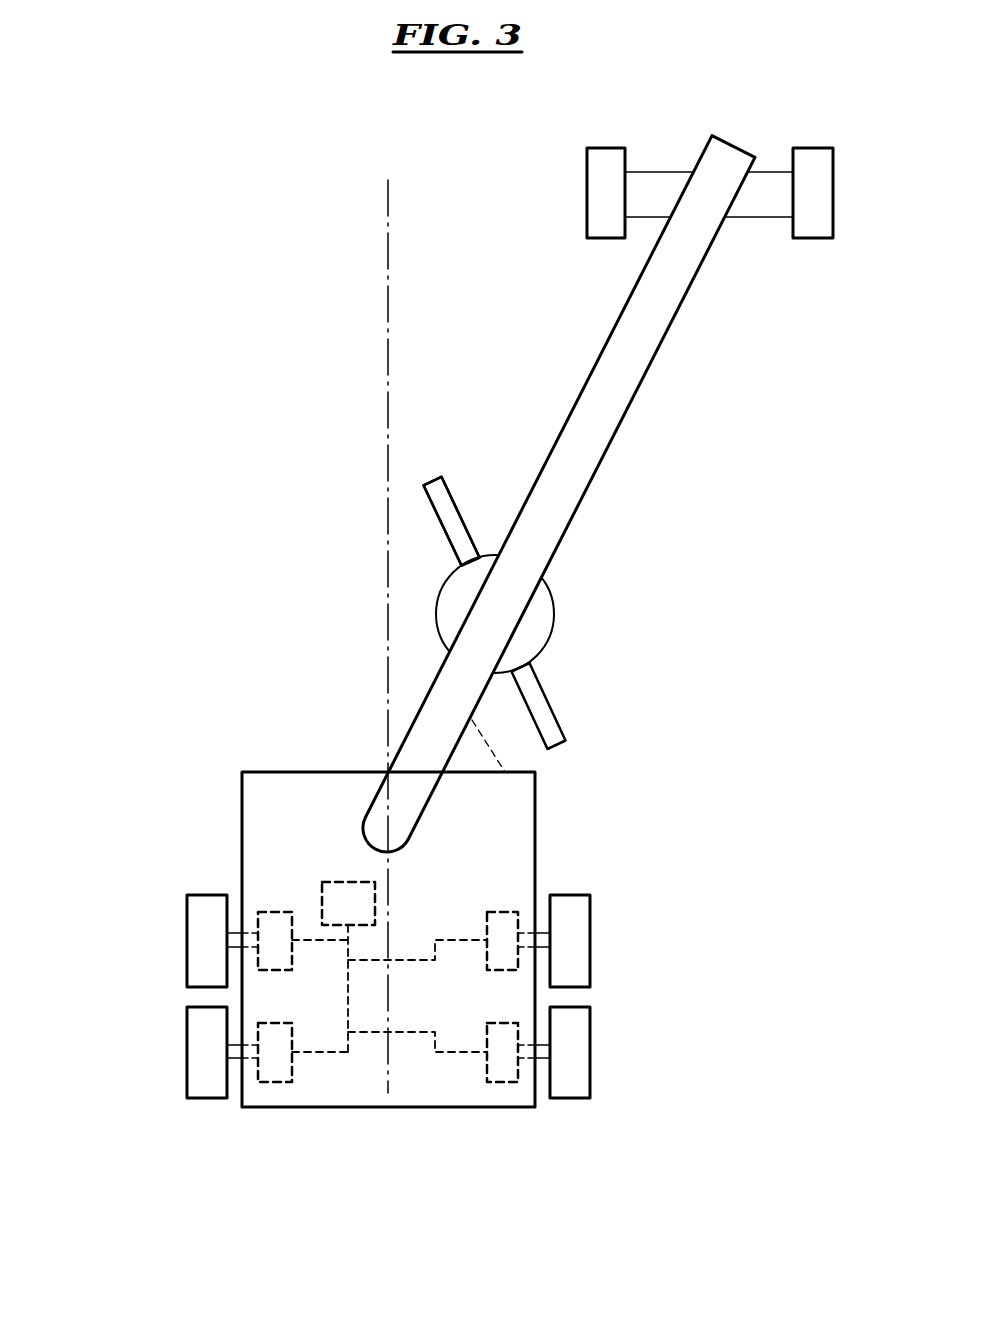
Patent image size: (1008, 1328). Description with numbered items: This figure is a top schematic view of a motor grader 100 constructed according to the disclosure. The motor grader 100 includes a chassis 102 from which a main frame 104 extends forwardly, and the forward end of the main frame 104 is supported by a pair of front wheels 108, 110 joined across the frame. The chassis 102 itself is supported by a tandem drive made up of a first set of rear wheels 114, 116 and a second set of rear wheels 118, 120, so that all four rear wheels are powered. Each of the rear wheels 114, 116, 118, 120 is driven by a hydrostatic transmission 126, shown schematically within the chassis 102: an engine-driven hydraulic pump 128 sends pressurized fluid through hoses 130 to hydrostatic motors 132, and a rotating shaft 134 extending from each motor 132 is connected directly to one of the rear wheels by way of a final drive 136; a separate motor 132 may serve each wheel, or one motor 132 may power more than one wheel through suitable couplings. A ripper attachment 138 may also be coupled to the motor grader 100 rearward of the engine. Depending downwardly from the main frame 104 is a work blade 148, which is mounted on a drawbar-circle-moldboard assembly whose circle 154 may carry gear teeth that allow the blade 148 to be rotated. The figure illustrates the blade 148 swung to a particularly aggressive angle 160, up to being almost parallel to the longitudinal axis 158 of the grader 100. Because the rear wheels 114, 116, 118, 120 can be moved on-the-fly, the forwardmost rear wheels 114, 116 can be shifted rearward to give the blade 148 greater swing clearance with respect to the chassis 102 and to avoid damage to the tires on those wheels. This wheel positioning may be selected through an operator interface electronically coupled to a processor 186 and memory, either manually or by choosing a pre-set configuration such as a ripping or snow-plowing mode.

The motor grader 100 is at (662, 520).
The chassis 102 is at (517, 852).
The main frame 104 is at (635, 358).
The front wheel 108 is at (602, 188).
The front wheel 110 is at (818, 220).
The rear wheel 114 is at (187, 963).
The rear wheel 116 is at (590, 920).
The rear wheel 118 is at (187, 1065).
The rear wheel 120 is at (590, 1065).
The hydrostatic transmission 126 is at (500, 808).
The hydraulic pump 128 is at (335, 882).
The hoses 130 is at (388, 960).
The hydrostatic motor 132 is at (487, 960).
The rotating shaft 134 is at (520, 1060).
The final drive 136 is at (233, 1098).
The ripper attachment 138 is at (235, 928).
The work blade 148 is at (437, 515).
The circle 154 is at (532, 618).
The longitudinal axis 158 is at (387, 300).
The aggressive angle 160 is at (460, 520).
The processor 186 is at (490, 747).